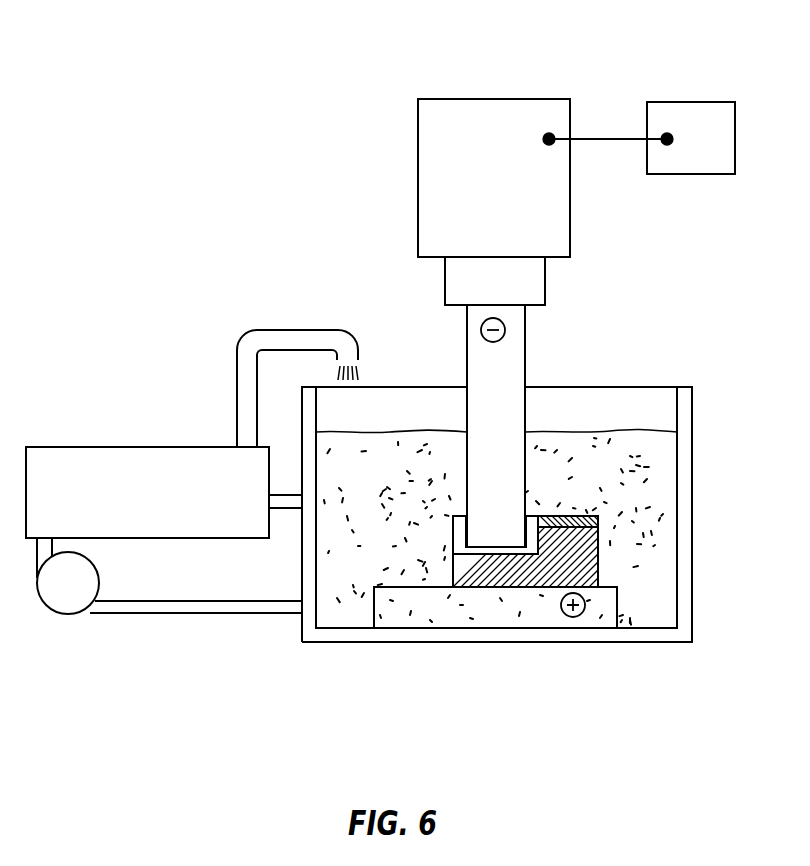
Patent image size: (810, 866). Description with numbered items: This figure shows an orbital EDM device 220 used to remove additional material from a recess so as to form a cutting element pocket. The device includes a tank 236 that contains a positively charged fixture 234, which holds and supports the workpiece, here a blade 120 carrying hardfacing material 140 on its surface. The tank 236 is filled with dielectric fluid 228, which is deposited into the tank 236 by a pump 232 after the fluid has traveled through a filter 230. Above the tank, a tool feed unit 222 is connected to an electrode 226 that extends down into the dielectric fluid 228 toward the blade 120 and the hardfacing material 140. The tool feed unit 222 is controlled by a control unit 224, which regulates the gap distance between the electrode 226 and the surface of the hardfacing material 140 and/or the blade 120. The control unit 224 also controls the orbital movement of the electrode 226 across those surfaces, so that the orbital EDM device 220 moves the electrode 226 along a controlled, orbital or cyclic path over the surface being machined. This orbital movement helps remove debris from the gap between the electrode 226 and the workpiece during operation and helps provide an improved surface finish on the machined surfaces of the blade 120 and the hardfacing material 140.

The orbital EDM device 220 is at (150, 89).
The tool feed unit 222 is at (458, 99).
The control unit 224 is at (688, 100).
The electrode 226 is at (467, 348).
The dielectric fluid 228 is at (435, 432).
The filter 230 is at (135, 447).
The pump 232 is at (65, 613).
The positively charged fixture 234 is at (437, 628).
The tank 236 is at (677, 602).
The blade 120 is at (598, 556).
The hardfacing material 140 is at (598, 520).